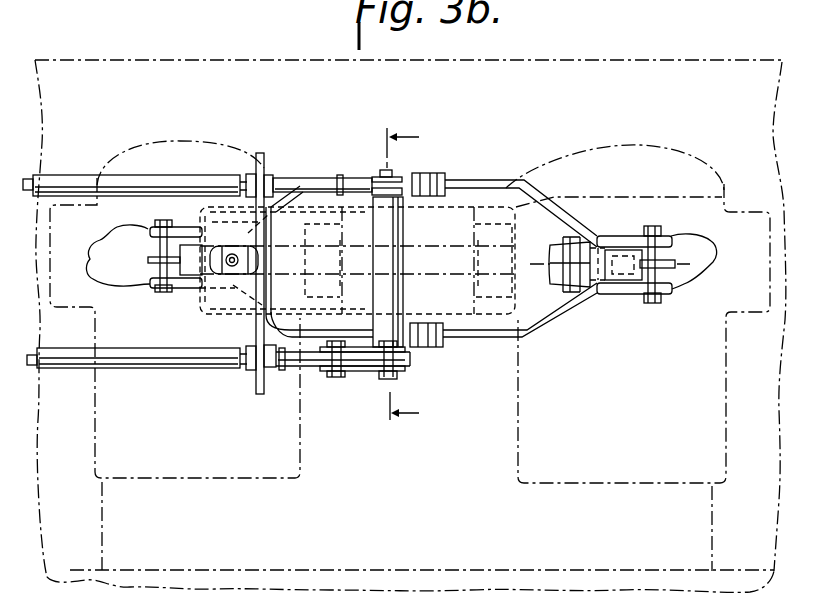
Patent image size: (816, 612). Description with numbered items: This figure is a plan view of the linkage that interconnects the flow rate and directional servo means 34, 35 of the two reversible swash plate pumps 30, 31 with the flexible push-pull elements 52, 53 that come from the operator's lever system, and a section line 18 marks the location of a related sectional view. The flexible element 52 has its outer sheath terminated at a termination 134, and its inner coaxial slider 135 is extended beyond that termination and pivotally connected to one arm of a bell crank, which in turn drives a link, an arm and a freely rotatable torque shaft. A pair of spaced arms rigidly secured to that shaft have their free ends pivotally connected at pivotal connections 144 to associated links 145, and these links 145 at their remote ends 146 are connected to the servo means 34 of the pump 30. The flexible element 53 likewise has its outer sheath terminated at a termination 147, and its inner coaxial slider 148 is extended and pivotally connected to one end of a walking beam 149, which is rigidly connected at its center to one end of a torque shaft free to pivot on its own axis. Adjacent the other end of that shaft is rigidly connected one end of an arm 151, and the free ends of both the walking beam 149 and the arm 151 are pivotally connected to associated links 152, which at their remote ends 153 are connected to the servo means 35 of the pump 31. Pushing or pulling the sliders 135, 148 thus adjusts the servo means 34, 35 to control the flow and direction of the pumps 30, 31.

The section line 18 is at (414, 276).
The reversible swash plate pump 30 is at (298, 446).
The reversible swash plate pump 31 is at (517, 441).
The flow rate and directional servo means 34 is at (675, 267).
The flow rate and directional servo means 35 is at (145, 263).
The flexible push-pull element 52 is at (60, 366).
The flexible push-pull element 53 is at (84, 183).
The termination 134 is at (250, 381).
The inner coaxial slider 135 is at (30, 363).
The pivotal connection 144 is at (440, 176).
The link 145 is at (553, 348).
The remote end 146 is at (708, 258).
The termination 147 is at (268, 164).
The inner coaxial slider 148 is at (30, 178).
The walking beam 149 is at (376, 175).
The arm 151 is at (407, 349).
The link 152 is at (196, 230).
The remote end 153 is at (114, 255).